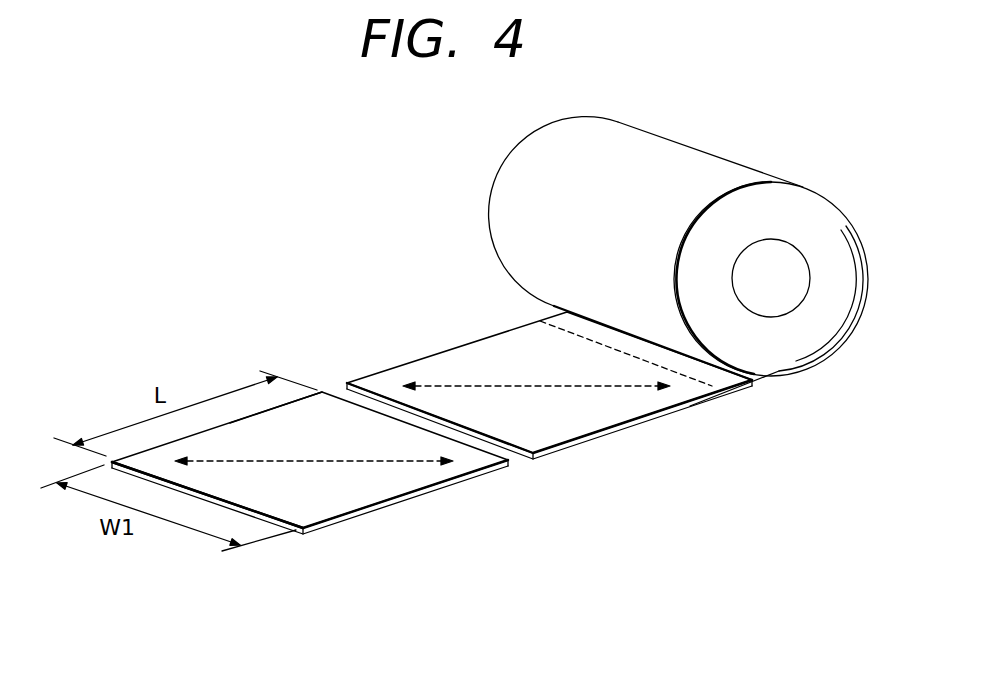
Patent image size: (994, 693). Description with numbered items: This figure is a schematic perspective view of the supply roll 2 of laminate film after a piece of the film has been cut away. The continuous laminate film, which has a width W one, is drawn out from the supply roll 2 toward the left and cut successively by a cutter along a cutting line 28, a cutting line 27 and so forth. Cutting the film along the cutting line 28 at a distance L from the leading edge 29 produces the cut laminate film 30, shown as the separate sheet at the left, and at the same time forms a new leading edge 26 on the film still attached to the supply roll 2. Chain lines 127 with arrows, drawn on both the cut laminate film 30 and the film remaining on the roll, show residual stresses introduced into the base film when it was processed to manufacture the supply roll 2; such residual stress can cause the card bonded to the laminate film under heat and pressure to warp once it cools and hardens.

The supply roll 2 is at (715, 163).
The new leading edge 26 is at (524, 458).
The cutting line 27 is at (556, 330).
The cutting line 28 is at (306, 391).
The leading edge 29 is at (254, 518).
The cut laminate film 30 is at (392, 482).
The chain lines with arrows 127 is at (310, 462).